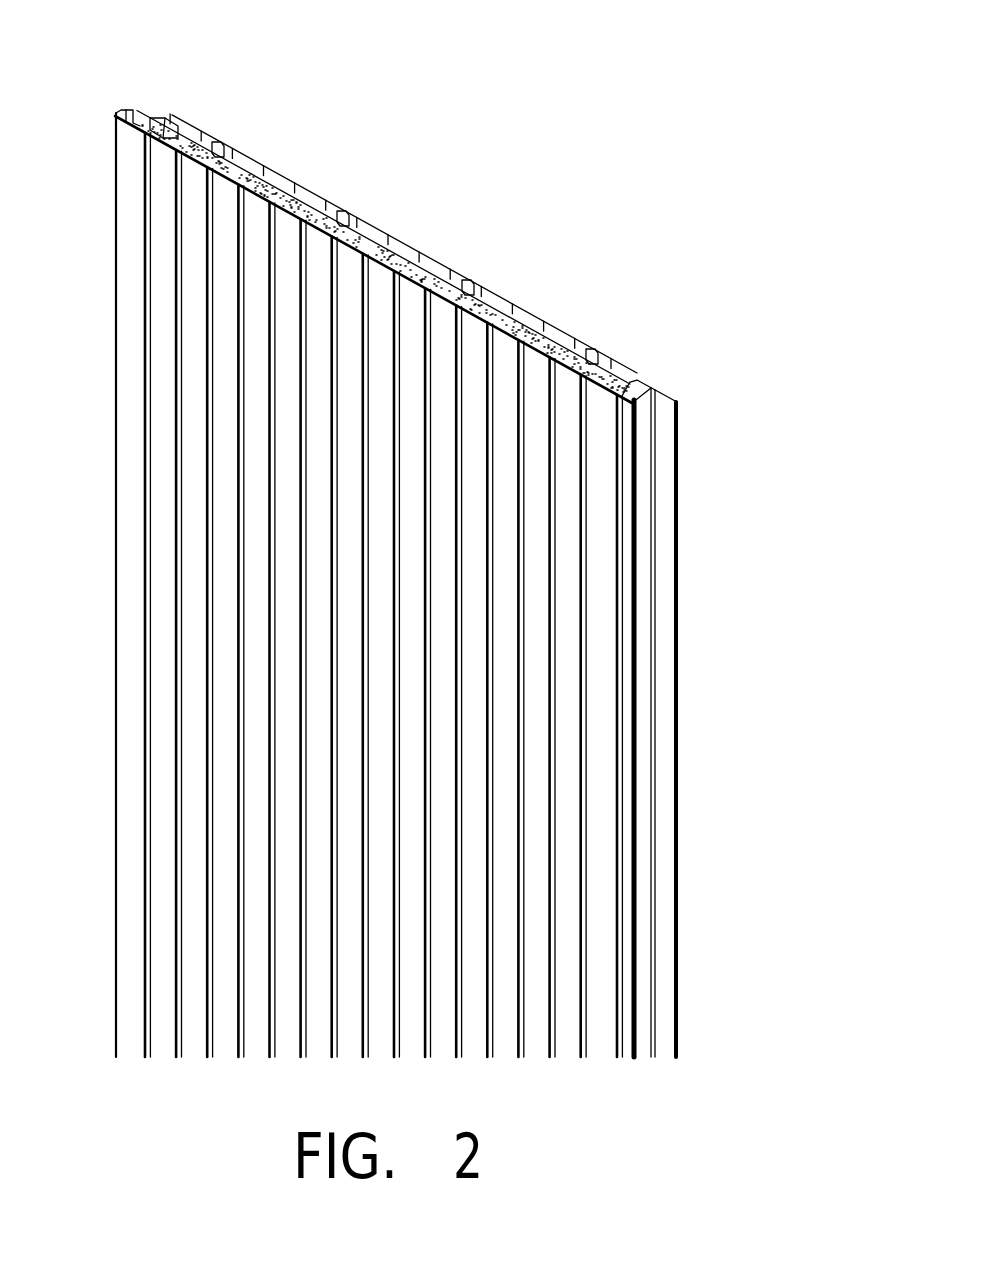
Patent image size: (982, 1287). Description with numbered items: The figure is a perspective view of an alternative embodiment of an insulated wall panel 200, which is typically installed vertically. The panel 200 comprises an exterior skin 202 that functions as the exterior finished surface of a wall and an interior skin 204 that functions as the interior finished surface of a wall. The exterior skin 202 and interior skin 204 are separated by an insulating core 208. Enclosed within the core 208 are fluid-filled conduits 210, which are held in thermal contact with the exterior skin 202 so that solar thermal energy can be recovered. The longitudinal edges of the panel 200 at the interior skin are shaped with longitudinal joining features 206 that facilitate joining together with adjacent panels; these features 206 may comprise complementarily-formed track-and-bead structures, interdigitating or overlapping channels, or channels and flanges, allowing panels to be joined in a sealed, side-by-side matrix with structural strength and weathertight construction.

The insulated panel 200 is at (459, 528).
The exterior skin 202 is at (487, 207).
The interior skin 204 is at (470, 238).
The longitudinal joining features 206 is at (713, 636).
The insulating core 208 is at (459, 586).
The fluid-filled conduits 210 is at (508, 253).